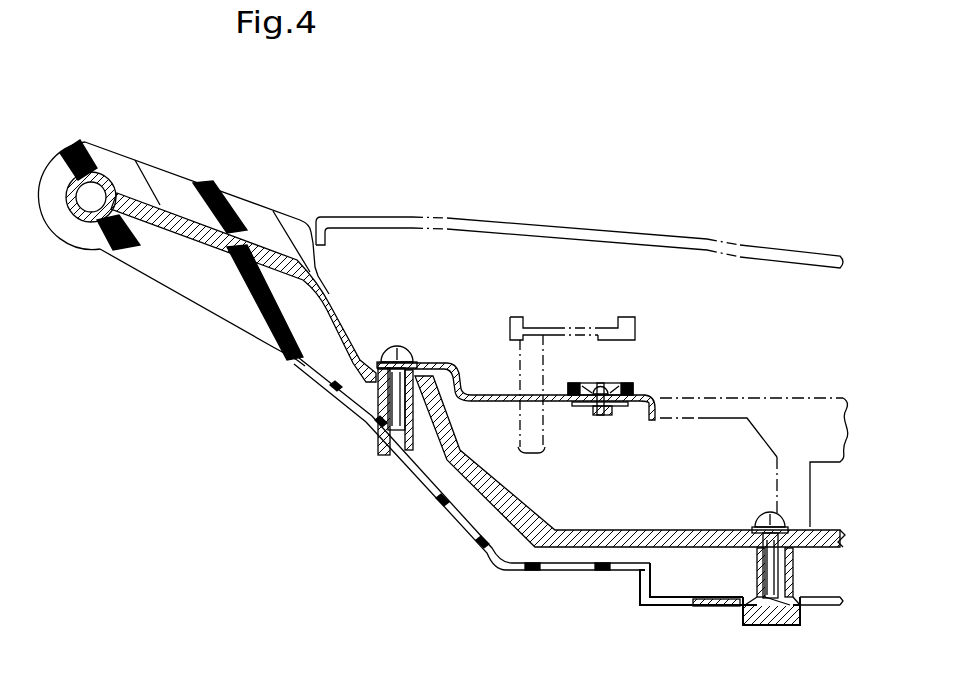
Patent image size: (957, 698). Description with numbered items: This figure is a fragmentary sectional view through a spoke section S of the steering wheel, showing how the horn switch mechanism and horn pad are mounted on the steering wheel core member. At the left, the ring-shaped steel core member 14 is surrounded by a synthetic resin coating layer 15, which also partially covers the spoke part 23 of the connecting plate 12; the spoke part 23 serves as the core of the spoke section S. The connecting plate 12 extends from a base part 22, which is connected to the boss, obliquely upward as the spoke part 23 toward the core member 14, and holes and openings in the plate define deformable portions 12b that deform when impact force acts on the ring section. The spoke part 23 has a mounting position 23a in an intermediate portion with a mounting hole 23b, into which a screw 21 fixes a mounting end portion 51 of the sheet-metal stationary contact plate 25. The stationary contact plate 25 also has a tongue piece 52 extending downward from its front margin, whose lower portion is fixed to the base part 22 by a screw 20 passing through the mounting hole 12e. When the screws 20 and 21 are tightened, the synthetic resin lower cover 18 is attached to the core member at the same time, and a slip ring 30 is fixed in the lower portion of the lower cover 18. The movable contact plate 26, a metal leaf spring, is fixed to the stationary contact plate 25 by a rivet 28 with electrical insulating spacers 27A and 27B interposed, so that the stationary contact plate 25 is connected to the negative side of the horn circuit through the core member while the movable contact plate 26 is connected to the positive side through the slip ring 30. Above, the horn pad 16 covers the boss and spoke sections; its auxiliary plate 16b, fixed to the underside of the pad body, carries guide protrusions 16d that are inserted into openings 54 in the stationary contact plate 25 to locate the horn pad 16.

The connecting plate 12 is at (550, 561).
The deformable portions 12b is at (815, 572).
The mounting hole 12e is at (773, 597).
The core member 14 is at (100, 229).
The coating layer 15 is at (163, 182).
The horn pad 16 is at (520, 230).
The auxiliary plate 16b is at (598, 330).
The guide protrusions 16d is at (530, 358).
The lower cover 18 is at (450, 520).
The screw 20 is at (765, 515).
The screw 21 is at (388, 348).
The base part 22 is at (672, 540).
The spoke part 23 is at (323, 303).
The mounting position 23a is at (352, 398).
The mounting hole 23b is at (392, 443).
The stationary contact plate 25 is at (650, 395).
The movable contact plate 26 is at (619, 384).
The electrical insulating spacer 27A is at (573, 383).
The electrical insulating spacer 27B is at (588, 404).
The rivet 28 is at (606, 415).
The slip ring 30 is at (697, 607).
The mounting end portion 51 is at (440, 363).
The tongue piece 52 is at (793, 483).
The openings 54 is at (530, 405).
The spoke section S is at (220, 371).